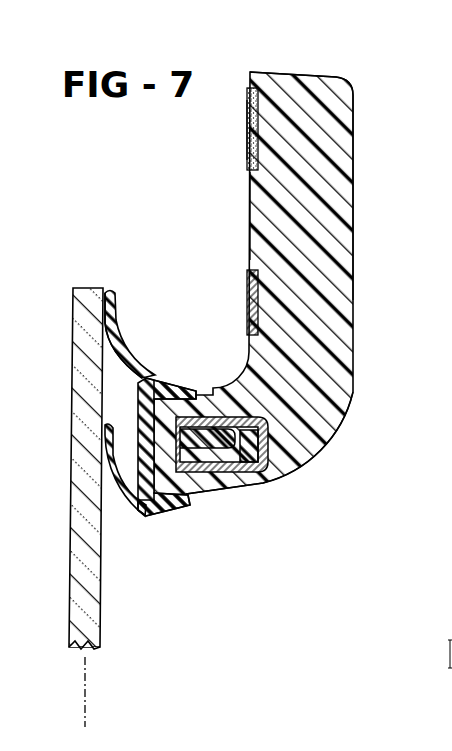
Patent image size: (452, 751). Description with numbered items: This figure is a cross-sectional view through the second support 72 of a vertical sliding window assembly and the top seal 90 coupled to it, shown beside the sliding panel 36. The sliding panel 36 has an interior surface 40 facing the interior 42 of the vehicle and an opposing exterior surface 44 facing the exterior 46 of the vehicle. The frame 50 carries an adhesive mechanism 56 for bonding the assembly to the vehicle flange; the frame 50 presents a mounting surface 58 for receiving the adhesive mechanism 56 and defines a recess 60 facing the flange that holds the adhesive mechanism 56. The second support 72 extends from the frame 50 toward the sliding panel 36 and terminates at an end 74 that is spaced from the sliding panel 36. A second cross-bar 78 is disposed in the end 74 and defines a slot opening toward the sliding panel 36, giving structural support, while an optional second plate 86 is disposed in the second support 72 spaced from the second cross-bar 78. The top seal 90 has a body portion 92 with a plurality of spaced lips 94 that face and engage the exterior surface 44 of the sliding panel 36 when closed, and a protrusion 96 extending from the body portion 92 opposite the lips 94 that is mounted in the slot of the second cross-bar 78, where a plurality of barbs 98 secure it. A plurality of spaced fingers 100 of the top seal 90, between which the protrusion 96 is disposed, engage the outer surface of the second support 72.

The sliding panel 36 is at (73, 514).
The interior surface 40 is at (68, 597).
The interior 42 is at (20, 650).
The exterior surface 44 is at (103, 597).
The exterior 46 is at (150, 650).
The frame 50 is at (363, 108).
The adhesive mechanism 56 is at (247, 120).
The mounting surface 58 is at (245, 177).
The recess 60 is at (263, 103).
The second support 72 is at (358, 265).
The end 74 is at (140, 405).
The second cross-bar 78 is at (277, 478).
The second plate 86 is at (250, 306).
The top seal 90 is at (152, 366).
The body portion 92 is at (188, 493).
The lip 94 is at (104, 320).
The protrusion 96 is at (268, 440).
The barbs 98 is at (268, 420).
The fingers 100 is at (173, 379).